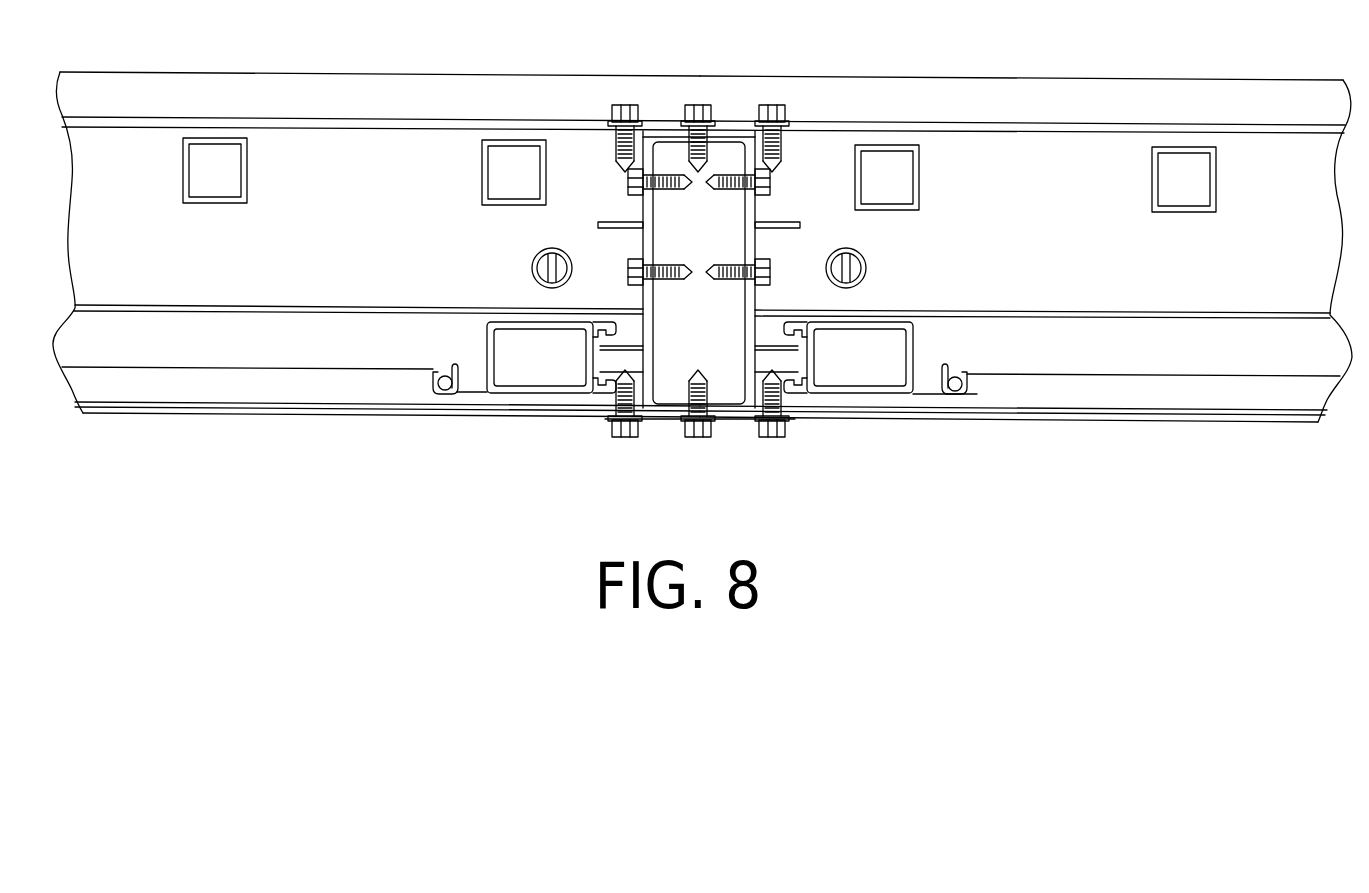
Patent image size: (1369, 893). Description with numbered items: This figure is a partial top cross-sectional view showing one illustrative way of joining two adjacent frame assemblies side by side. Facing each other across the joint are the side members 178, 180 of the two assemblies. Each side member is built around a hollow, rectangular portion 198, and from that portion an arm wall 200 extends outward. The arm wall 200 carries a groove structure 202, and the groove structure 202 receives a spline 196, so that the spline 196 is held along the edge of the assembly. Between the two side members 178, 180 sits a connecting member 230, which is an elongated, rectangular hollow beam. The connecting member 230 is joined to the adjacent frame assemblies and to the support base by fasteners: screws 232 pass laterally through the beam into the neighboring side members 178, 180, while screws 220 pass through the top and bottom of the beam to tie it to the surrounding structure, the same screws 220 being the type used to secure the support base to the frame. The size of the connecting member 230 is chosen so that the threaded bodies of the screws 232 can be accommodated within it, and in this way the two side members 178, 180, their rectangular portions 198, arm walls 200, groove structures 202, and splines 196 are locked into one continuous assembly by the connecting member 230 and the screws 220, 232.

The side member 178 is at (928, 356).
The side member 180 is at (482, 346).
The spline 196 is at (445, 371).
The hollow rectangular portion 198 is at (528, 396).
The arm wall 200 is at (466, 396).
The groove structure 202 is at (430, 385).
The screw 220 is at (621, 105).
The connecting member 230 is at (667, 402).
The screw 232 is at (627, 172).